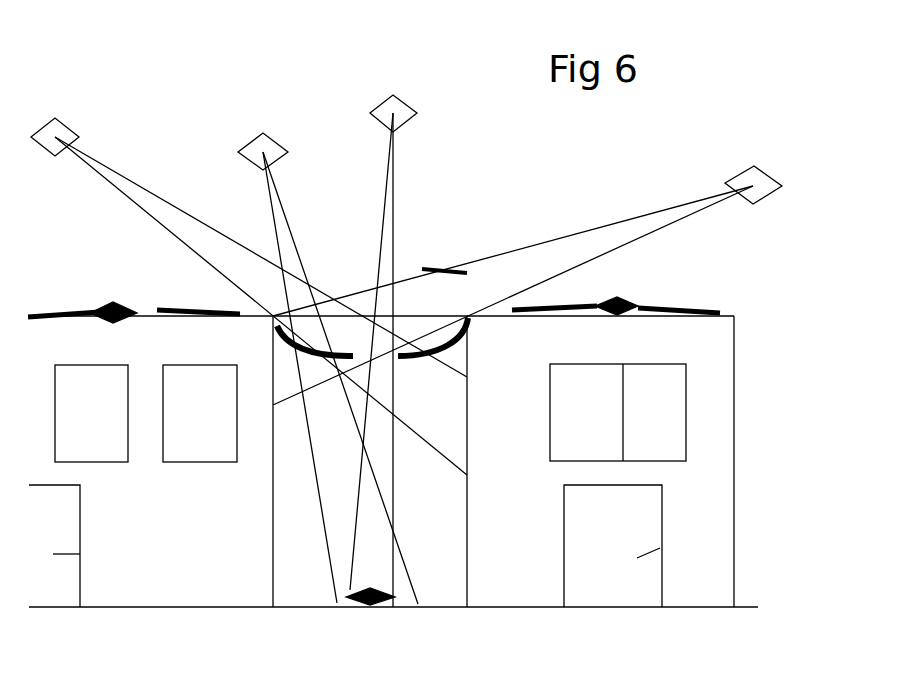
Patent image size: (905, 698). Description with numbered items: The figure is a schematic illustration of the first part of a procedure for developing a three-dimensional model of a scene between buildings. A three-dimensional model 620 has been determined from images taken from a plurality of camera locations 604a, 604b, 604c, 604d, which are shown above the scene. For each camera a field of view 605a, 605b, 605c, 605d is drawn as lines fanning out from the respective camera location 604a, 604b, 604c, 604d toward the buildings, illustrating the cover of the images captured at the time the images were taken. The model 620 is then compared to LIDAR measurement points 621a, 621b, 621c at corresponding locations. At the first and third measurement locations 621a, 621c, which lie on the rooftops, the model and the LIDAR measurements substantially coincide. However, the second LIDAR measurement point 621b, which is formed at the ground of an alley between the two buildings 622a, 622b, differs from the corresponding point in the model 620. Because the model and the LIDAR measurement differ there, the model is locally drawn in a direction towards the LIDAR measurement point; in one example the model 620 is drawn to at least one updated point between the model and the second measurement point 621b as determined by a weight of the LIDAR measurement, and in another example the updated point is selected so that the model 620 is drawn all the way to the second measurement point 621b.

The camera location 604a is at (40, 122).
The camera location 604b is at (263, 132).
The camera location 604c is at (393, 95).
The camera location 604d is at (738, 172).
The field of view 605a is at (137, 182).
The field of view 605b is at (290, 230).
The field of view 605c is at (395, 210).
The field of view 605d is at (537, 240).
The 3D model 620 is at (207, 310).
The LIDAR measurement point 621a is at (118, 300).
The LIDAR measurement point 621b is at (377, 607).
The LIDAR measurement point 621c is at (622, 297).
The building 622a is at (152, 607).
The building 622b is at (692, 607).